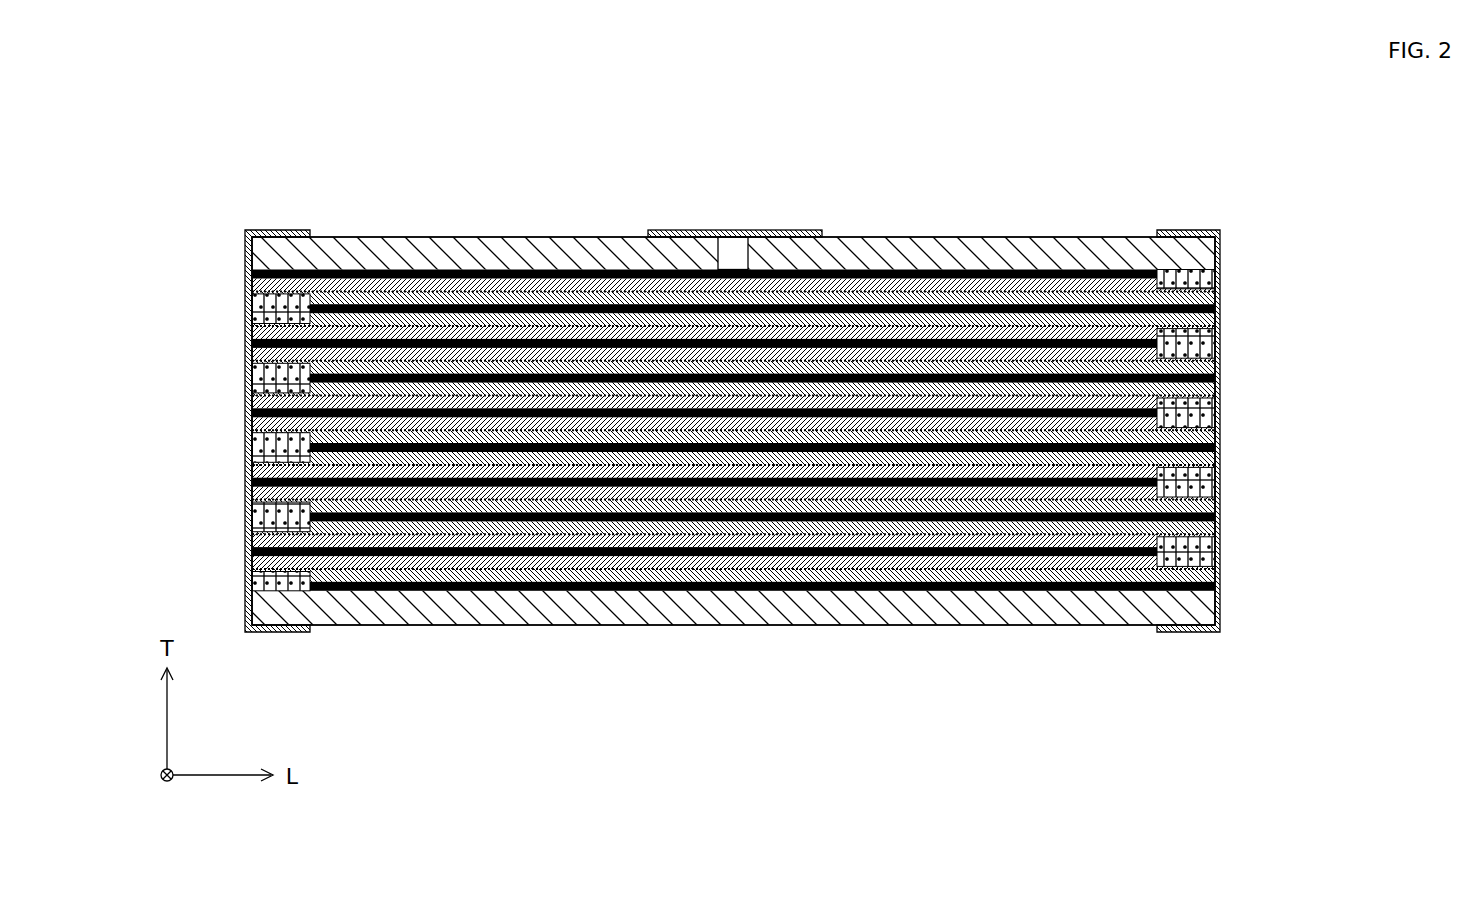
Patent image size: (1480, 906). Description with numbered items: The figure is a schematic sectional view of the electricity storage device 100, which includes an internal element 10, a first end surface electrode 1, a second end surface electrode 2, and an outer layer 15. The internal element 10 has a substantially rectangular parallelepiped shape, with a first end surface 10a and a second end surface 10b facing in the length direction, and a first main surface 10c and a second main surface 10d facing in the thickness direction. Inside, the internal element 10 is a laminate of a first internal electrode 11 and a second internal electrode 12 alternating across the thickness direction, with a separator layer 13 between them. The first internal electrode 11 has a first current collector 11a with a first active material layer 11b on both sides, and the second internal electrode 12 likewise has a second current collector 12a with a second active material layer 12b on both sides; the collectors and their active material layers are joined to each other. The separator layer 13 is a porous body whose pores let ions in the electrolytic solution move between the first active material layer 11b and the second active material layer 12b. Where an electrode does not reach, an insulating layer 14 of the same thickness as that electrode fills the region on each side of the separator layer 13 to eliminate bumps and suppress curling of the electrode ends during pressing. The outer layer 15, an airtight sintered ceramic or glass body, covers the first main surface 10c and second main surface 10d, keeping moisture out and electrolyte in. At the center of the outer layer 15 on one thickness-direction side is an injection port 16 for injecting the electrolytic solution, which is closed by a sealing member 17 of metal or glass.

The electricity storage device 100 is at (1038, 190).
The internal element 10 is at (976, 258).
The first end surface 10a is at (245, 313).
The second end surface 10b is at (1222, 278).
The first main surface 10c is at (493, 266).
The second main surface 10d is at (710, 600).
The first internal electrode 11 is at (142, 442).
The first current collector 11a is at (250, 481).
The first active material layer 11b is at (250, 470).
The second internal electrode 12 is at (1328, 343).
The second current collector 12a is at (1222, 377).
The second active material layer 12b is at (1222, 365).
The separator layer 13 is at (1222, 432).
The insulating layer 14 is at (250, 373).
The outer layer 15 is at (890, 257).
The injection port 16 is at (738, 248).
The sealing member 17 is at (747, 243).
The first end surface electrode 1 is at (270, 230).
The second end surface electrode 2 is at (1204, 230).